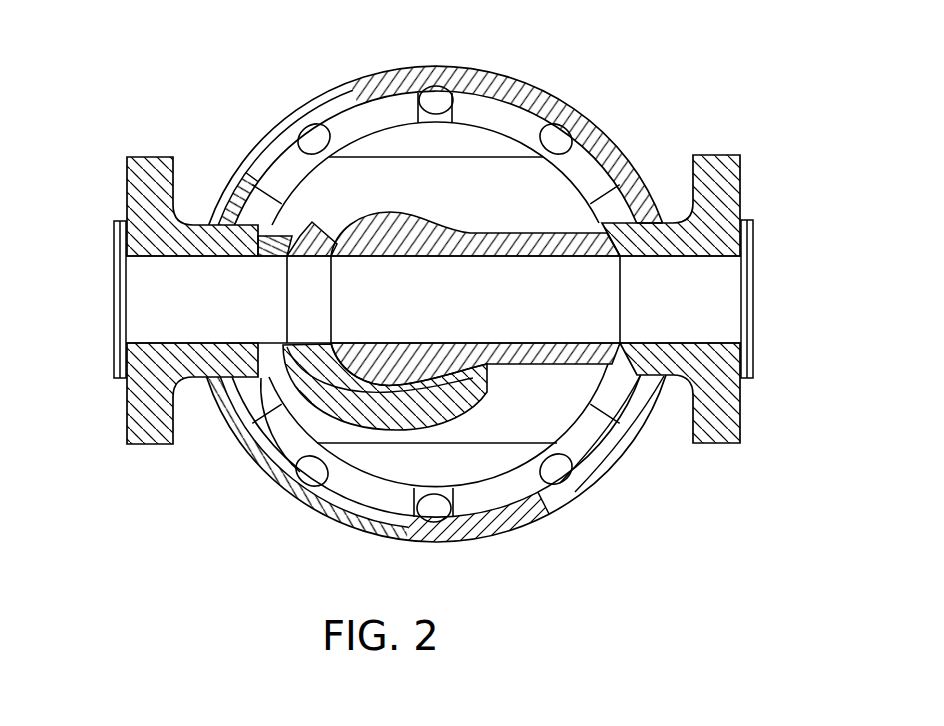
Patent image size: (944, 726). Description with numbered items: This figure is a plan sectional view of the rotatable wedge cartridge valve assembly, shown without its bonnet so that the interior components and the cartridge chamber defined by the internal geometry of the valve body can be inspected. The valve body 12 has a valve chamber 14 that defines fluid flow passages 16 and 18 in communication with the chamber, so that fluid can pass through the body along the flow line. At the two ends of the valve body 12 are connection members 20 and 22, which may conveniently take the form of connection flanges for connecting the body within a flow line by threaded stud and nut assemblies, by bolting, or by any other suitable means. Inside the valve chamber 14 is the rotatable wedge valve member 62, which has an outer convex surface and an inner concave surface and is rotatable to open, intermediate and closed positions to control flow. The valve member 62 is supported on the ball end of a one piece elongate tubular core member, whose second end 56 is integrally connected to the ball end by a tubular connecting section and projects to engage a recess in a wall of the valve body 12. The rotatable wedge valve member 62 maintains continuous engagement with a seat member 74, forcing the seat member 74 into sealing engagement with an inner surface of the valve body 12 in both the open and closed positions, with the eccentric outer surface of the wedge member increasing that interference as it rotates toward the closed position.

The valve body 12 is at (316, 503).
The valve chamber 14 is at (492, 460).
The fluid flow passage 16 is at (146, 276).
The fluid flow passage 18 is at (724, 320).
The connection member 20 is at (147, 186).
The connection member 22 is at (722, 176).
The second end 56 is at (387, 236).
The rotatable wedge valve member 62 is at (386, 427).
The seat member 74 is at (244, 446).